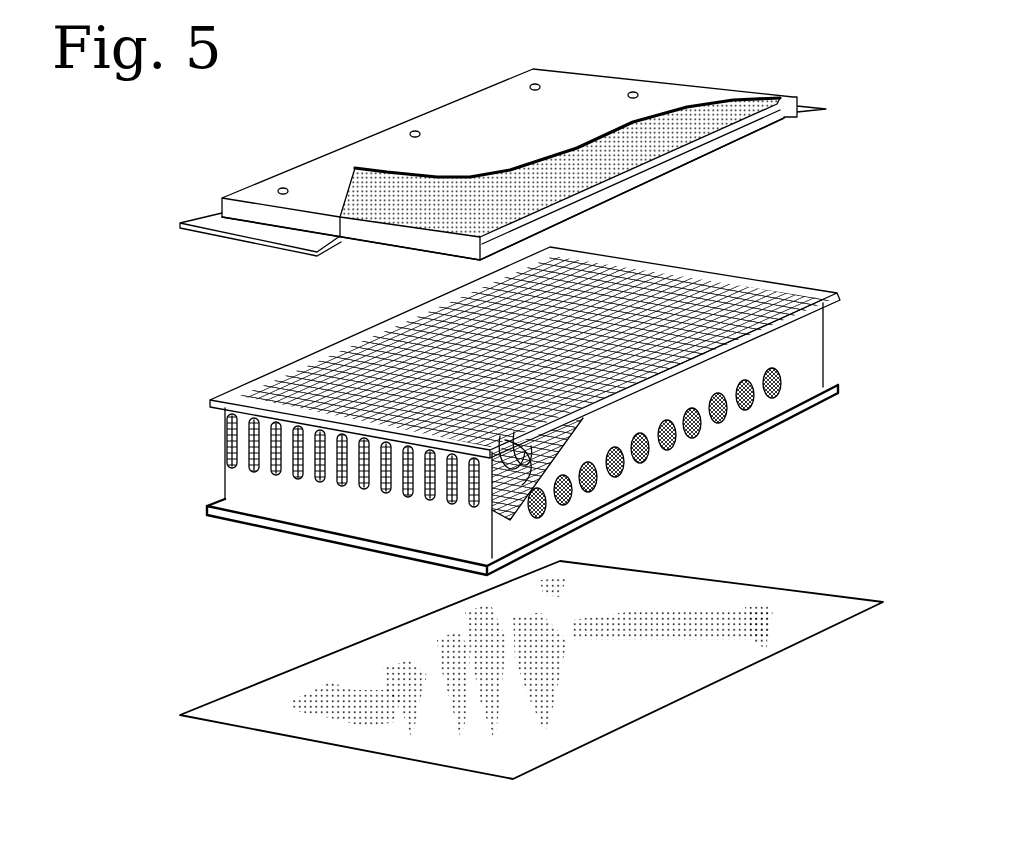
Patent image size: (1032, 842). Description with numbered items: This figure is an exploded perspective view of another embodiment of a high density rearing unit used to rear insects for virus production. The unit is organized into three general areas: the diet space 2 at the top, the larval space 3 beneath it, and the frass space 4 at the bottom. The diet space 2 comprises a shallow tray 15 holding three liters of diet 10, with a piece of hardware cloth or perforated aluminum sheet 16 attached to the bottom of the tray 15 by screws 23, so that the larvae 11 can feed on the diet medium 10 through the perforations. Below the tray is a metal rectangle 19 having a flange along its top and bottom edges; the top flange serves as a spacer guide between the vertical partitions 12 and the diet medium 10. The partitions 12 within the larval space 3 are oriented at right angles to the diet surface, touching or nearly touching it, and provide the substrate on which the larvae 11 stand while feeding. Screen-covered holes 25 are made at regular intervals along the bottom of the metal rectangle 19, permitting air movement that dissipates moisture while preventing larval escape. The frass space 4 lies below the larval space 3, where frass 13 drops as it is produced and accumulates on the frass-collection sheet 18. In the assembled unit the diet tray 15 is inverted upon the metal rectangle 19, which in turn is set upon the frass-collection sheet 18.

The diet space 2 is at (531, 153).
The larval space 3 is at (557, 352).
The frass space 4 is at (526, 439).
The diet medium 10 is at (748, 134).
The larvae 11 is at (542, 463).
The vertical partitions 12 is at (337, 355).
The frass 13 is at (683, 625).
The tray 15 is at (507, 80).
The perforated aluminum sheet 16 is at (427, 227).
The frass-collection sheet 18 is at (531, 679).
The metal rectangle 19 is at (223, 487).
The screws 23 is at (415, 131).
The holes 25 is at (641, 463).